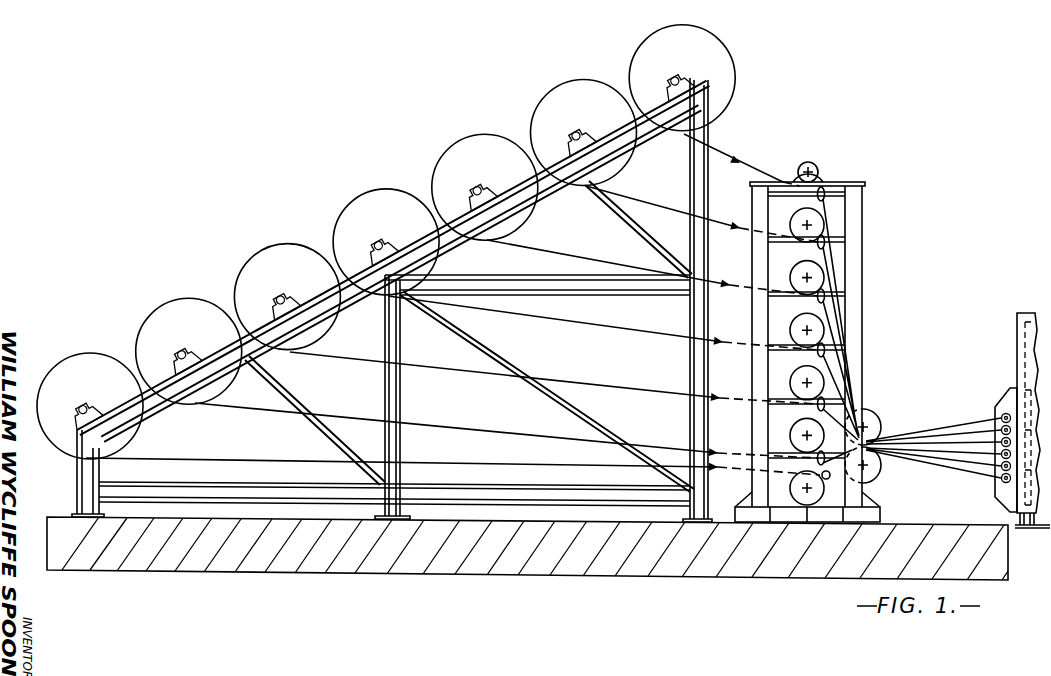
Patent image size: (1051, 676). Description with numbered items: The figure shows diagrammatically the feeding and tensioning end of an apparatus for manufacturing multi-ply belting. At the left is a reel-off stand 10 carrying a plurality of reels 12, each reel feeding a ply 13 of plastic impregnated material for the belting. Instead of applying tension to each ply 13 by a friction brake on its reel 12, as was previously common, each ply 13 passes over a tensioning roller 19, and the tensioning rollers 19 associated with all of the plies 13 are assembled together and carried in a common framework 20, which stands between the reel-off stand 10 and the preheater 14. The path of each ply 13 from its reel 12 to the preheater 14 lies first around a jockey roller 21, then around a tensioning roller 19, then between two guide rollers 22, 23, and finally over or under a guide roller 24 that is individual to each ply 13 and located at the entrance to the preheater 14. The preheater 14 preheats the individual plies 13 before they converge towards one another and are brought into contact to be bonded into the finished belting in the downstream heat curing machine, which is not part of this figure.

The reel-off stand 10 is at (400, 404).
The reels 12 is at (660, 41).
The plies 13 is at (952, 463).
The preheater 14 is at (1027, 328).
The tensioning rollers 19 is at (810, 373).
The common framework 20 is at (855, 236).
The jockey roller 21 is at (843, 398).
The guide roller 22 is at (873, 427).
The guide roller 23 is at (868, 467).
The guide roller 24 is at (1000, 482).